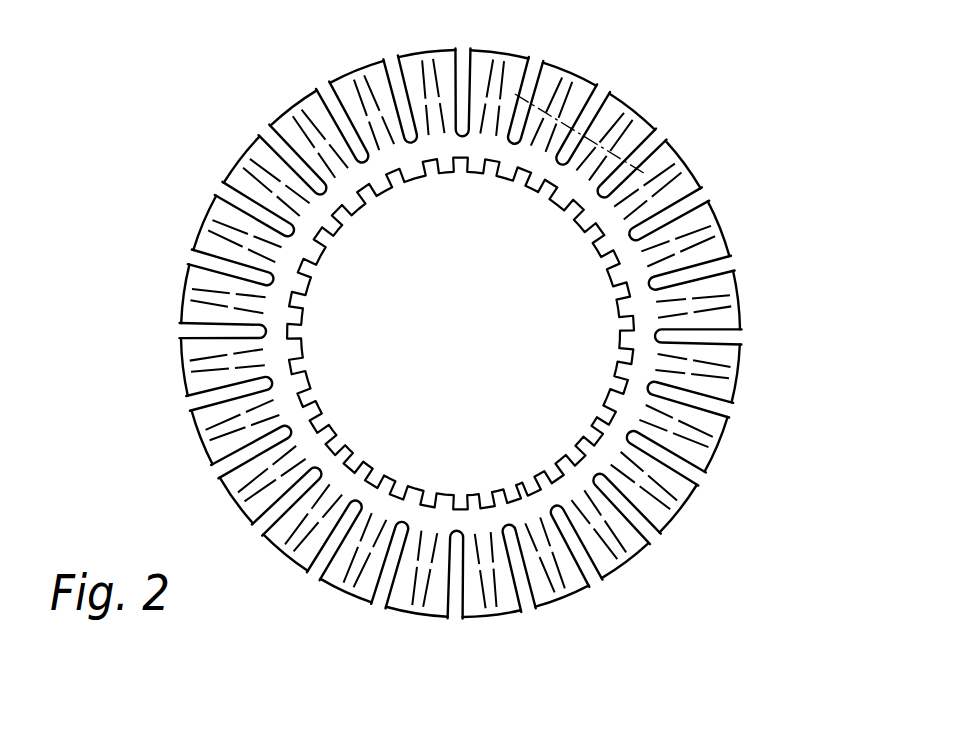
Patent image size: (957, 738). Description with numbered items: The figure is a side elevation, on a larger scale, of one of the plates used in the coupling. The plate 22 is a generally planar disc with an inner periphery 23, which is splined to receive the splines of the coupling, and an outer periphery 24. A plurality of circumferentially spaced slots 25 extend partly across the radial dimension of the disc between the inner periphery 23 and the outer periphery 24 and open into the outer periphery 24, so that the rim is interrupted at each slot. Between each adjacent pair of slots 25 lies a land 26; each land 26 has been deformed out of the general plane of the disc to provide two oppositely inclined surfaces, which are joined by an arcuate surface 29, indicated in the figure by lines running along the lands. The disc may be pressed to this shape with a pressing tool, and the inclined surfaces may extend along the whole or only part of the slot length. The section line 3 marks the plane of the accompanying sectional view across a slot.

The section line 3- 3 is at (531, 82).
The plate 22 is at (731, 476).
The inner periphery 23 is at (605, 408).
The outer periphery 24 is at (730, 425).
The slots 25 is at (464, 62).
The lands 26 is at (474, 314).
The arcuate surface 29 is at (363, 98).